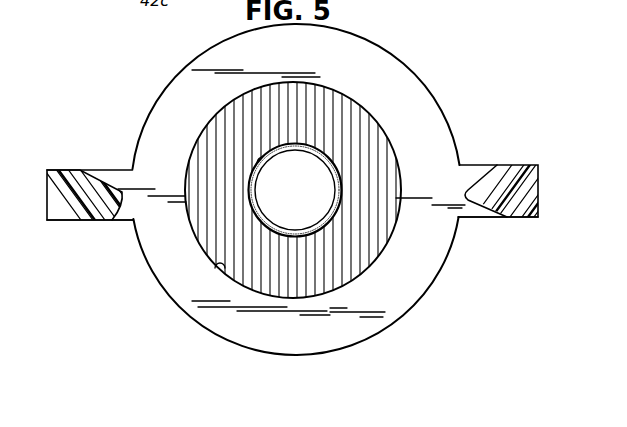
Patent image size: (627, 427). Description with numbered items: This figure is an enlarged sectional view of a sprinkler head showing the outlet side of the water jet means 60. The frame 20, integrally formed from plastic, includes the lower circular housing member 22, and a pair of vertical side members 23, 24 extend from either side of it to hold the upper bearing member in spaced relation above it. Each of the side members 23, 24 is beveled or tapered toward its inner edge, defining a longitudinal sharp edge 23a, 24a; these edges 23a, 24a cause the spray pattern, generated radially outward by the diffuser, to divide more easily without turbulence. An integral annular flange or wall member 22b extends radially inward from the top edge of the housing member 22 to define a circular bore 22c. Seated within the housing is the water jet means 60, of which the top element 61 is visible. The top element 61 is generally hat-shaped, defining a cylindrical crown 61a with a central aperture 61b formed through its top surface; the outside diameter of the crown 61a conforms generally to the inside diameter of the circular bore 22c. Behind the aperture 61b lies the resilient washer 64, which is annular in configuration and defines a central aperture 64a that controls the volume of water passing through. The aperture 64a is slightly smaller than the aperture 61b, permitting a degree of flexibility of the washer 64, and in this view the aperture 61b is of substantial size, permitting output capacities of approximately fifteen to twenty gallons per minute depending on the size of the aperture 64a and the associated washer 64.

The frame 20 is at (540, 164).
The lower circular housing member 22 is at (408, 88).
The annular flange or wall member 22b is at (195, 257).
The circular bore 22c is at (220, 277).
The vertical side member 23 is at (63, 176).
The longitudinal sharp edge 23a is at (122, 218).
The vertical side member 24 is at (511, 175).
The longitudinal sharp edge 24a is at (474, 222).
The water jet means 60 is at (311, 176).
The top element 61 is at (384, 251).
The cylindrical crown 61a is at (302, 98).
The central aperture 61b is at (258, 162).
The resilient washer 64 is at (329, 169).
The central aperture 64a is at (286, 229).